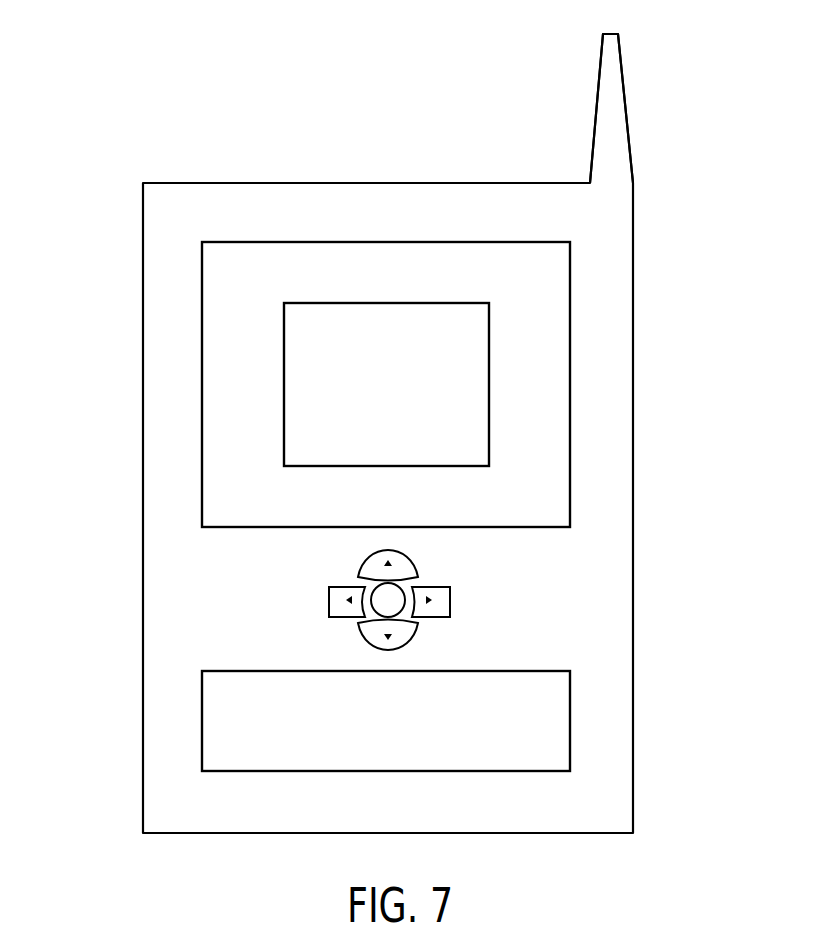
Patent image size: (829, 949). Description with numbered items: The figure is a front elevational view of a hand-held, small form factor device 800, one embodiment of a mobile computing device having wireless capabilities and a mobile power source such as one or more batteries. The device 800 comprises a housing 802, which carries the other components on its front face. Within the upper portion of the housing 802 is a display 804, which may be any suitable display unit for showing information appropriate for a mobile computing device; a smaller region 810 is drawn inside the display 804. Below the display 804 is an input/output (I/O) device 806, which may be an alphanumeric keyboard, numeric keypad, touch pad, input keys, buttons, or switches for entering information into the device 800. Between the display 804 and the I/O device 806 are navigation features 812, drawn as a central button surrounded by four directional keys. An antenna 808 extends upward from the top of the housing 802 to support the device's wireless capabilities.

The small form factor device 800 is at (367, 433).
The housing 802 is at (142, 590).
The display 804 is at (571, 293).
The input/output (I/O) device 806 is at (571, 718).
The antenna 808 is at (597, 108).
The display window 810 is at (386, 302).
The navigation features 812 is at (480, 601).